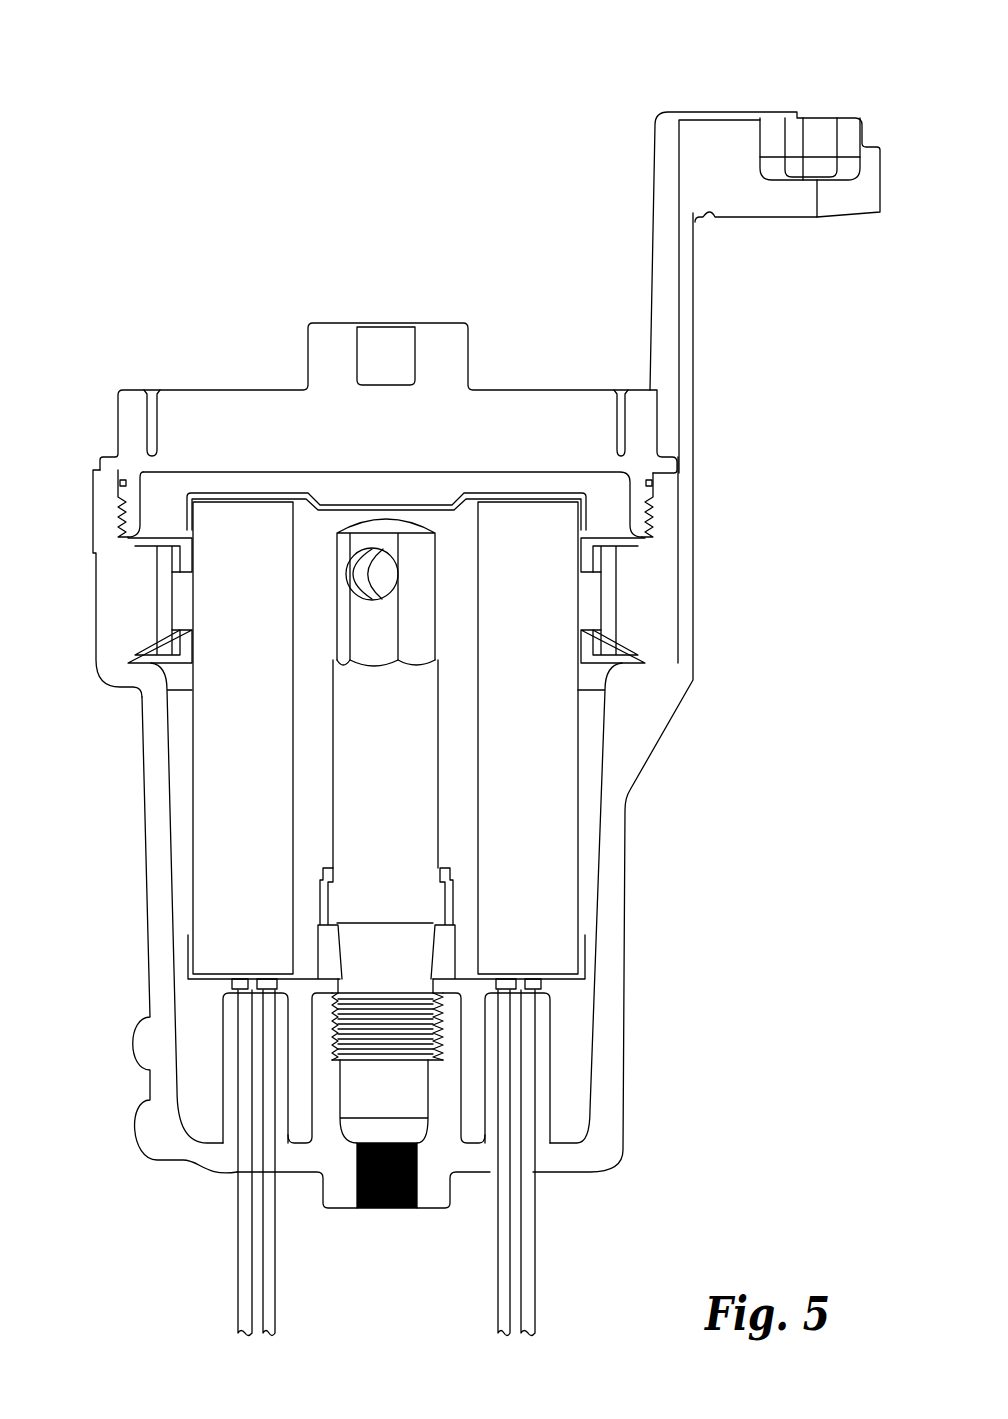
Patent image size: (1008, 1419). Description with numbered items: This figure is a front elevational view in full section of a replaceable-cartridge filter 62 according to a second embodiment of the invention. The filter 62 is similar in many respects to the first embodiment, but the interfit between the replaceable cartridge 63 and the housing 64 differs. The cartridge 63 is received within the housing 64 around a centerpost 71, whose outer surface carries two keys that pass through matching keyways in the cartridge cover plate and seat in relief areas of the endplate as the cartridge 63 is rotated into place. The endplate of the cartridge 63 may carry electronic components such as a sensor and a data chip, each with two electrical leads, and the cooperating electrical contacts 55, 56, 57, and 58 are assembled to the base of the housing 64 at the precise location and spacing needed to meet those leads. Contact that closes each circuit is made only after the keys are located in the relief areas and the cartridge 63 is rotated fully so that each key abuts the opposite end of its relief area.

The electrical contact 55 is at (259, 990).
The electrical contact 56 is at (240, 990).
The electrical contact 57 is at (524, 990).
The electrical contact 58 is at (531, 992).
The filter 62 is at (832, 60).
The replaceable cartridge 63 is at (540, 822).
The housing 64 is at (640, 708).
The centerpost 71 is at (358, 771).